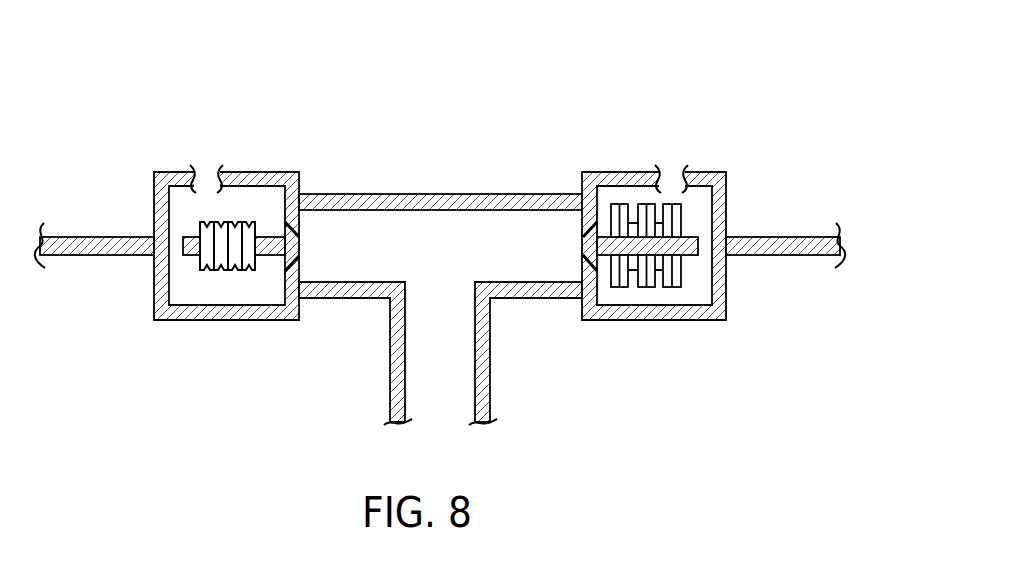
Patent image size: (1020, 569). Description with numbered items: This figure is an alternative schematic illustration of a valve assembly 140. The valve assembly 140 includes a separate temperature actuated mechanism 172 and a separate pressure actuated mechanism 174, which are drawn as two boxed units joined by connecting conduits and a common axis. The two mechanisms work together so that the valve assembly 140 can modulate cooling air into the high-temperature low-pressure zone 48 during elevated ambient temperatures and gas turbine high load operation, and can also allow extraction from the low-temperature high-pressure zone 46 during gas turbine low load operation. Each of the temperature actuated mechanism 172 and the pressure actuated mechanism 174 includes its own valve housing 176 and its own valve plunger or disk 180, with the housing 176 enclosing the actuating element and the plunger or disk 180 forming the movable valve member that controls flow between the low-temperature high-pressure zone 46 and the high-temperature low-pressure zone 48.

The valve assembly 140 is at (793, 138).
The valve housing 176 is at (240, 168).
The pressure actuated mechanism 174 is at (234, 242).
The temperature actuated mechanism 172 is at (670, 204).
The valve plunger or disk 180 is at (302, 212).
The low-temperature high-pressure zone 46 is at (735, 48).
The high-temperature low-pressure zone 48 is at (768, 397).